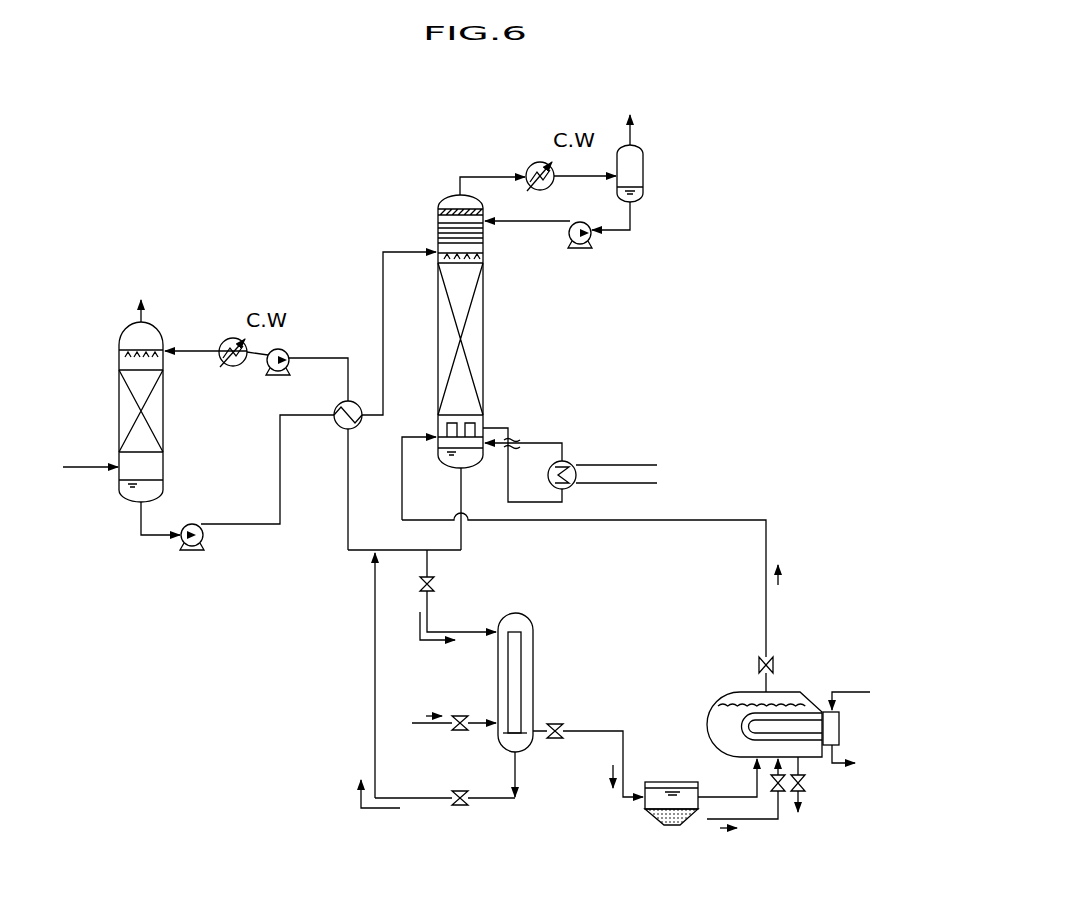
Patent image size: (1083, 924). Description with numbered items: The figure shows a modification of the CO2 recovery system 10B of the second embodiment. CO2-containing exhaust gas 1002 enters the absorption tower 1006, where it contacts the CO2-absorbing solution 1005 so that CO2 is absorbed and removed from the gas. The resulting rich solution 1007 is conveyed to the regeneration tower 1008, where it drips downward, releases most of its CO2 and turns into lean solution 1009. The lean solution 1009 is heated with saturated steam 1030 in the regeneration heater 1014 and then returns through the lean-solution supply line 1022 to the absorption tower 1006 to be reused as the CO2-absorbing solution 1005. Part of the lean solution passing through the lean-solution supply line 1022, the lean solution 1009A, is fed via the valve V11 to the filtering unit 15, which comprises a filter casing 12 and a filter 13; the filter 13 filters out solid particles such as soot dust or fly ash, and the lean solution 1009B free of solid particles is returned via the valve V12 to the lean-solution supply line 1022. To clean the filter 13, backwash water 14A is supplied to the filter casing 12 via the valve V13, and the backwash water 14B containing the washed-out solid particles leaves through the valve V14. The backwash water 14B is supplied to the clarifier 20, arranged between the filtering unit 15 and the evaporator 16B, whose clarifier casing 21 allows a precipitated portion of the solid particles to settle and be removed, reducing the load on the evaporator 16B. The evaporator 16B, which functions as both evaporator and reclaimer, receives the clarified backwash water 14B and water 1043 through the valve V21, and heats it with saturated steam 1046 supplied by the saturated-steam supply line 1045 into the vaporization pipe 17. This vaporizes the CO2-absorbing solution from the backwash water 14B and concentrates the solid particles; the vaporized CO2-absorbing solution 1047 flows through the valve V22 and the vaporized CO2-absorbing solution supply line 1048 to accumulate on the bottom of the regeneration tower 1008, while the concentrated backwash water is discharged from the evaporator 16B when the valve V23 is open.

The CO2-containing exhaust gas 1002 is at (87, 462).
The CO2-absorbing solution 1005 is at (207, 348).
The absorption tower 1006 is at (155, 318).
The rich solution 1007 is at (420, 242).
The regeneration tower 1008 is at (453, 195).
The lean solution 1009 is at (331, 508).
The lean solution 1009A is at (418, 622).
The lean solution 1009B is at (359, 795).
The regeneration heater 1014 is at (570, 460).
The lean-solution supply line 1022 is at (385, 548).
The saturated steam 1030 is at (644, 469).
The water 1043 is at (720, 830).
The saturated-steam supply line 1045 is at (853, 691).
The saturated steam 1046 is at (842, 698).
The vaporized CO2-absorbing solution 1047 is at (786, 572).
The vaporized CO2-absorbing solution supply line 1048 is at (770, 621).
The CO2 recovery system 10B is at (723, 108).
The filter casing 12 is at (534, 627).
The filter 13 is at (521, 695).
The backwash water 14A is at (426, 716).
The backwash water 14B is at (607, 780).
The filtering unit 15 is at (556, 688).
The evaporator 16B is at (729, 694).
The vaporization pipe 17 is at (738, 728).
The clarifier 20 is at (652, 828).
The clarifier casing 21 is at (700, 782).
The valve V11 is at (437, 584).
The valve V12 is at (458, 806).
The valve V13 is at (457, 731).
The valve V14 is at (555, 738).
The valve V21 is at (781, 793).
The valve V22 is at (776, 665).
The valve V23 is at (808, 783).